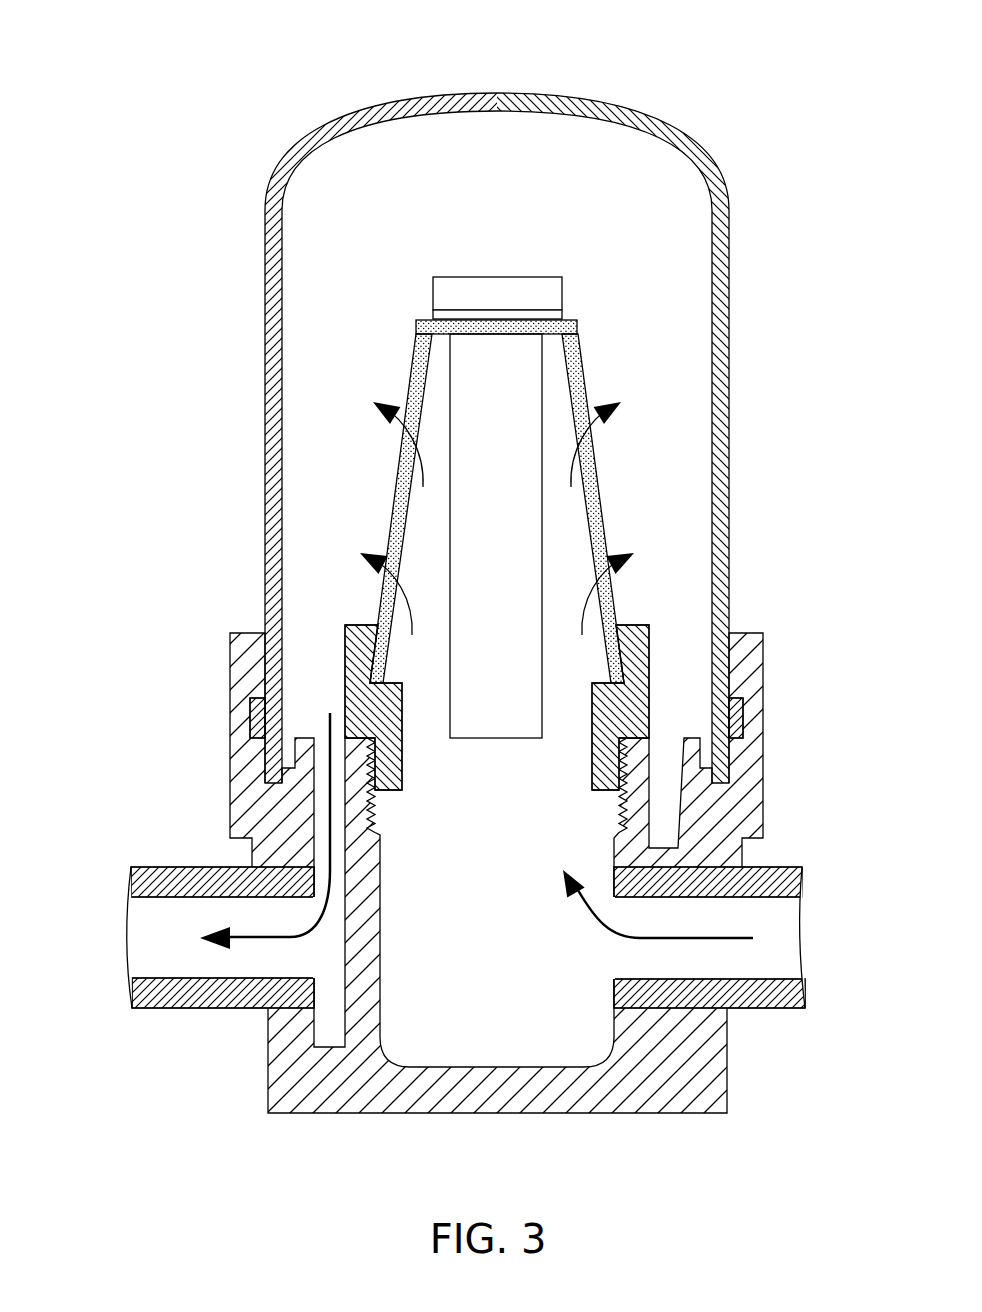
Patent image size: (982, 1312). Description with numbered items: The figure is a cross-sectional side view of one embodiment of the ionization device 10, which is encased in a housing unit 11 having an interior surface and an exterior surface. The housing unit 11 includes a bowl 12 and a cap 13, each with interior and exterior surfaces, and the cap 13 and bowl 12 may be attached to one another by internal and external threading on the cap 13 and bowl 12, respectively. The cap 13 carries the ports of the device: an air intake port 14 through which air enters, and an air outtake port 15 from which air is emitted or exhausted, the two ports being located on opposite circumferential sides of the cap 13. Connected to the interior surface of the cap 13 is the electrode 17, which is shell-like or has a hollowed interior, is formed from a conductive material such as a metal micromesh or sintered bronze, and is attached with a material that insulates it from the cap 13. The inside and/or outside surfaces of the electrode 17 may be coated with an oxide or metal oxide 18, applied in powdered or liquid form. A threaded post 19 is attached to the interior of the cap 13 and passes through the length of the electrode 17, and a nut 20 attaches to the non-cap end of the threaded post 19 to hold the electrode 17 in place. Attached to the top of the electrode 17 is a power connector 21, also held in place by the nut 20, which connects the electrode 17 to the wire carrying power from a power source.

The ionization device 10 is at (331, 60).
The housing unit 11 is at (226, 734).
The bowl 12 is at (602, 100).
The cap 13 is at (763, 793).
The air intake port 14 is at (800, 922).
The air outtake port 15 is at (135, 945).
The electrode 17 is at (412, 350).
The metal oxide 18 is at (597, 473).
The threaded post 19 is at (508, 504).
The nut 20 is at (535, 277).
The power connector 21 is at (563, 313).